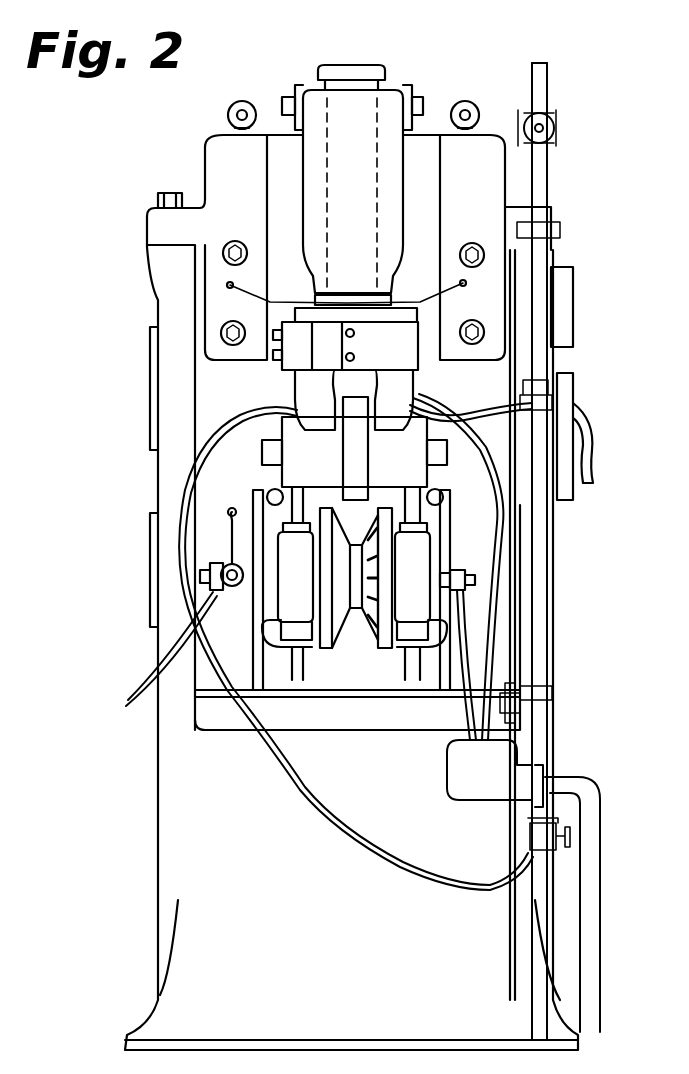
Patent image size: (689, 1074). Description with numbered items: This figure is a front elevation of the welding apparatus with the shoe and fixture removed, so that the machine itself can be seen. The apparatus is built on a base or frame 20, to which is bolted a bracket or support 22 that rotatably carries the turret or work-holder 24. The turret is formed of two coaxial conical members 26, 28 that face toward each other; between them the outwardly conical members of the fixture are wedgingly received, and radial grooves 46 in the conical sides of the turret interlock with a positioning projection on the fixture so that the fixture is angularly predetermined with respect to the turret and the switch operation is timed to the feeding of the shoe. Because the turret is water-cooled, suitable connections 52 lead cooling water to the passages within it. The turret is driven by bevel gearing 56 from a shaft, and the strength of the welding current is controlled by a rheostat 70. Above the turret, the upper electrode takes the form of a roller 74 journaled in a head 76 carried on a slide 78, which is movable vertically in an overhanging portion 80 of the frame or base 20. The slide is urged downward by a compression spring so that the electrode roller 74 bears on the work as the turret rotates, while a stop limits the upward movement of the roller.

The base or frame 20 is at (187, 780).
The bracket or support 22 is at (228, 652).
The turret or work-holder 24 is at (357, 612).
The conical member 26 is at (398, 655).
The conical member 28 is at (296, 680).
The radial grooves 46 is at (380, 570).
The water-cooling connections 52 is at (540, 87).
The bevel gearing 56 is at (217, 592).
The rheostat 70 is at (592, 430).
The electrode roller 74 is at (352, 455).
The head 76 is at (315, 398).
The slide 78 is at (380, 63).
The overhanging portion 80 is at (420, 200).